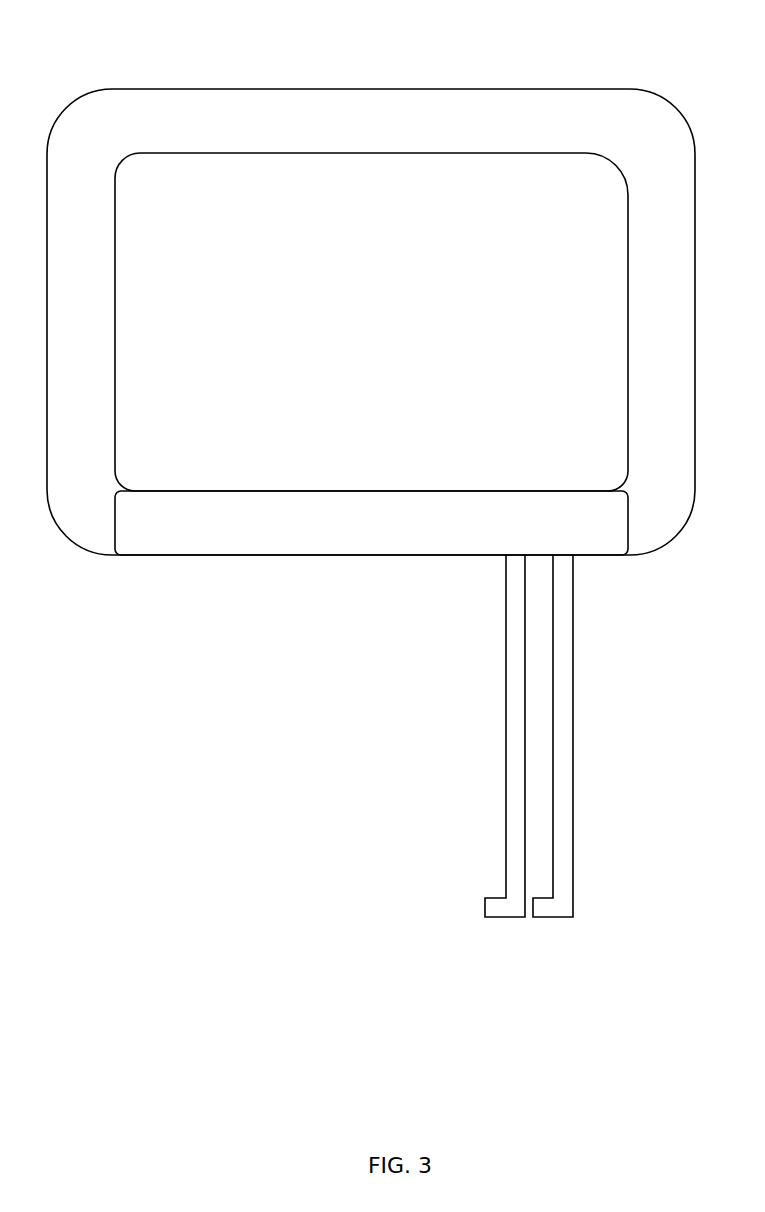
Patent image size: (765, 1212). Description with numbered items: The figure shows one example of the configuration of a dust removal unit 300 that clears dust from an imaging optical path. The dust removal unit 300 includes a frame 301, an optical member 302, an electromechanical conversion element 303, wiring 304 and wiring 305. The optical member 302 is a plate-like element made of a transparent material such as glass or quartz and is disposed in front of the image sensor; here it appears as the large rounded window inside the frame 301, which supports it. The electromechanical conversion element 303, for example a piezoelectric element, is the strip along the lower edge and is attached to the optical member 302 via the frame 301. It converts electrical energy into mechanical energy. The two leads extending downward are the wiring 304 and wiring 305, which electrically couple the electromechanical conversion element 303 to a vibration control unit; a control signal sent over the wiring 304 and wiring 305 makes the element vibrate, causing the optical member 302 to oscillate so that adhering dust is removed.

The dust removal unit 300 is at (392, 1023).
The frame 301 is at (618, 87).
The optical member 302 is at (357, 183).
The electromechanical conversion element 303 is at (315, 555).
The wiring 304 is at (568, 725).
The wiring 305 is at (510, 725).